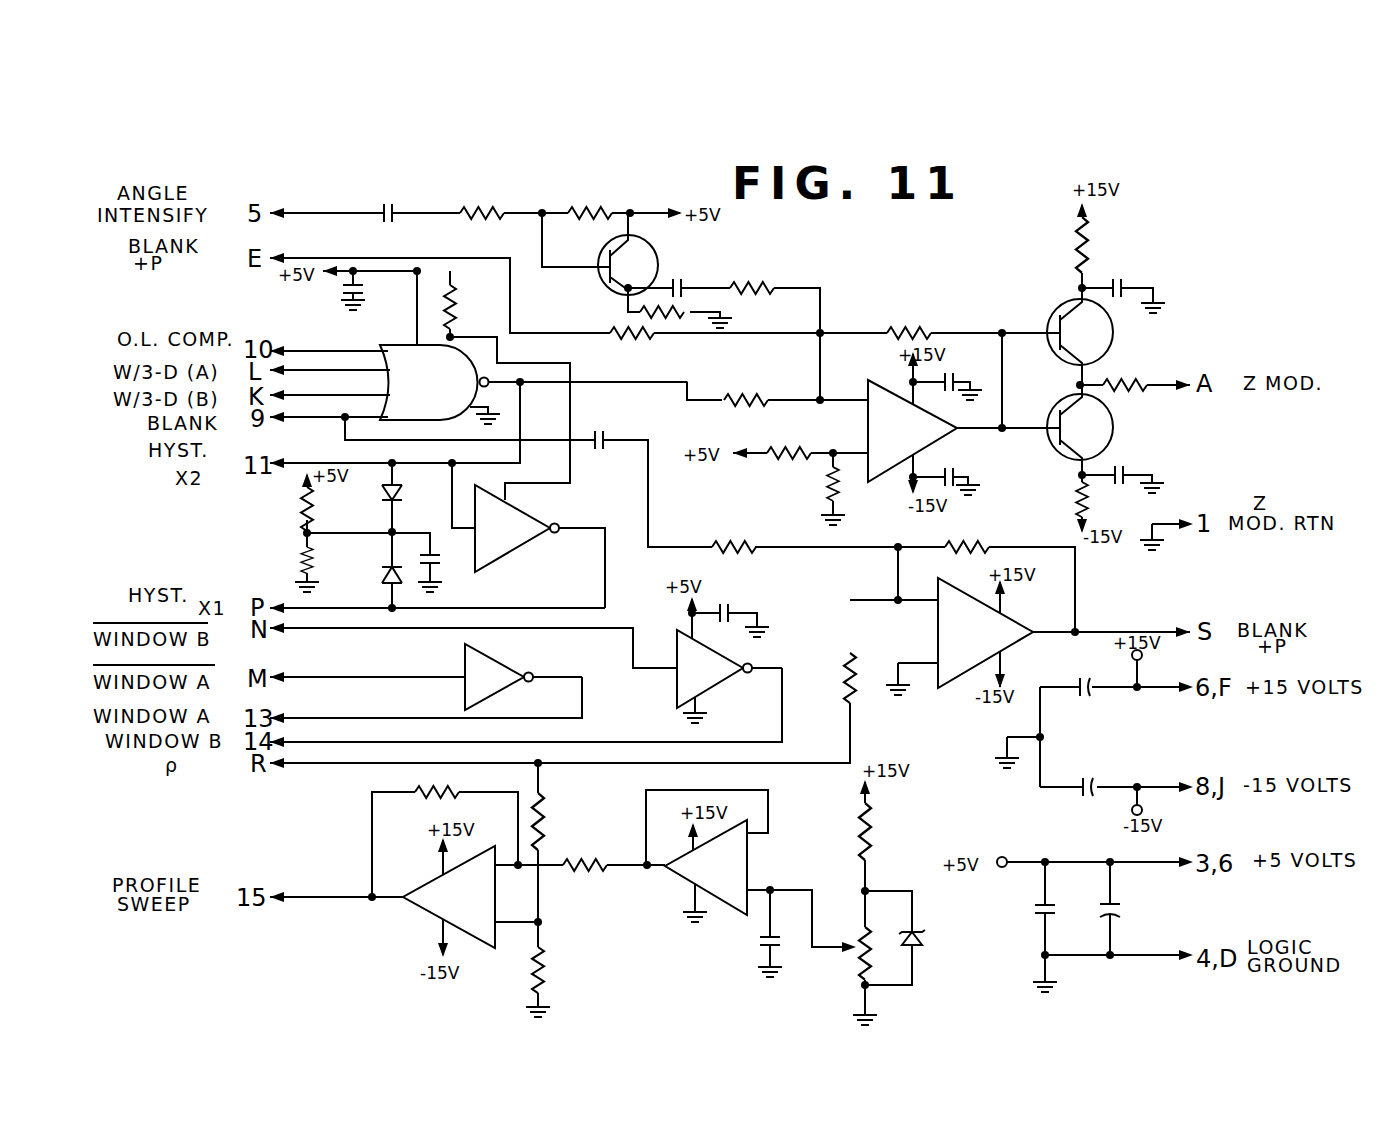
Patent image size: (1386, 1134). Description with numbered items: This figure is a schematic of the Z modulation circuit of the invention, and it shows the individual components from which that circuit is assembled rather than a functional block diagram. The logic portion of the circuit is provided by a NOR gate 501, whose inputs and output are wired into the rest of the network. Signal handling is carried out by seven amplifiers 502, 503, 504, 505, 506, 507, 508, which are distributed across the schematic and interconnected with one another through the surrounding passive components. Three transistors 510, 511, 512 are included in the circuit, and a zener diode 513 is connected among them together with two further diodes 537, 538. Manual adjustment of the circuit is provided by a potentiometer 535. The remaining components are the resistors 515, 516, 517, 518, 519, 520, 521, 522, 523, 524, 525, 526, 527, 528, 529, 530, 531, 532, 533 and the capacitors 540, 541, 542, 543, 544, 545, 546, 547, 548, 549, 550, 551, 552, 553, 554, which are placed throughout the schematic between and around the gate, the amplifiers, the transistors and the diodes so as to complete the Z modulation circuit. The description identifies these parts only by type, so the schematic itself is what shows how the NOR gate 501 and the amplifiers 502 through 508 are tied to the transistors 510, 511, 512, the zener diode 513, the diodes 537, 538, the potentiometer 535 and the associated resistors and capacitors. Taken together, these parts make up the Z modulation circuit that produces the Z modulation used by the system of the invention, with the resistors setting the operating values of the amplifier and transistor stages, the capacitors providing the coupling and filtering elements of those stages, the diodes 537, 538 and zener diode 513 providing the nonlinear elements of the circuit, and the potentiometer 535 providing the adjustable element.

The NOR gate 501 is at (385, 347).
The amplifier 502 is at (540, 512).
The amplifier 503 is at (520, 668).
The amplifier 504 is at (415, 915).
The amplifier 505 is at (712, 690).
The amplifier 506 is at (755, 857).
The amplifier 507 is at (876, 480).
The amplifier 508 is at (950, 705).
The transistor 510 is at (1115, 335).
The transistor 511 is at (1048, 427).
The transistor 512 is at (605, 290).
The zener diode 513 is at (920, 930).
The resistor 515 is at (508, 185).
The resistor 516 is at (617, 183).
The resistor 517 is at (700, 306).
The resistor 518 is at (765, 285).
The resistor 519 is at (640, 340).
The resistor 520 is at (748, 396).
The resistor 521 is at (796, 432).
The resistor 522 is at (830, 485).
The resistor 523 is at (940, 300).
The resistor 524 is at (1092, 238).
The resistor 525 is at (1130, 395).
The resistor 526 is at (1086, 497).
The resistor 527 is at (855, 700).
The resistor 528 is at (430, 800).
The resistor 529 is at (545, 820).
The resistor 530 is at (598, 875).
The resistor 531 is at (546, 965).
The resistor 532 is at (880, 830).
The resistor 533 is at (452, 310).
The potentiometer 535 is at (856, 968).
The diode 537 is at (383, 492).
The diode 538 is at (380, 578).
The capacitor 540 is at (345, 293).
The capacitor 541 is at (389, 198).
The capacitor 542 is at (676, 280).
The capacitor 543 is at (985, 368).
The capacitor 544 is at (625, 420).
The capacitor 545 is at (945, 455).
The capacitor 546 is at (1117, 280).
The capacitor 547 is at (1125, 470).
The capacitor 548 is at (440, 562).
The capacitor 549 is at (735, 610).
The capacitor 550 is at (1095, 697).
The capacitor 551 is at (1093, 785).
The capacitor 552 is at (1035, 910).
The capacitor 553 is at (1125, 915).
The capacitor 554 is at (760, 945).